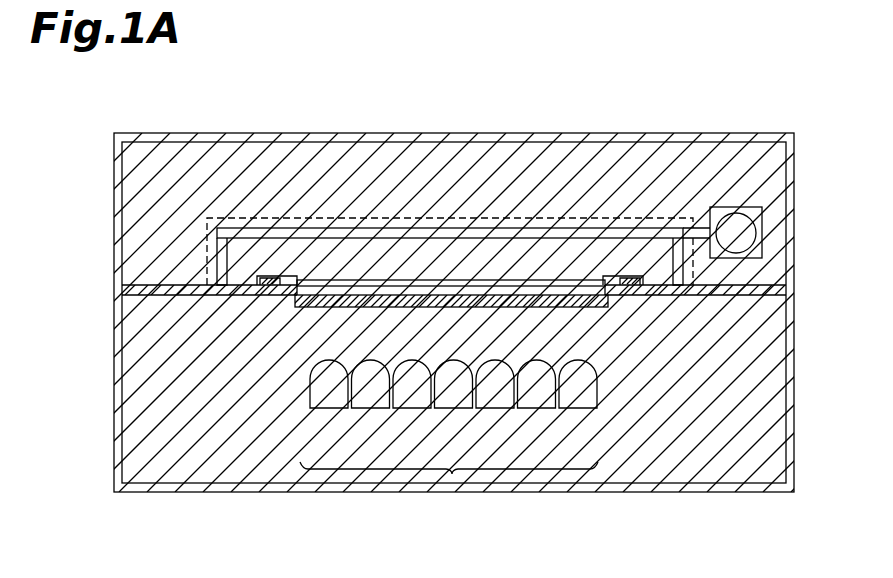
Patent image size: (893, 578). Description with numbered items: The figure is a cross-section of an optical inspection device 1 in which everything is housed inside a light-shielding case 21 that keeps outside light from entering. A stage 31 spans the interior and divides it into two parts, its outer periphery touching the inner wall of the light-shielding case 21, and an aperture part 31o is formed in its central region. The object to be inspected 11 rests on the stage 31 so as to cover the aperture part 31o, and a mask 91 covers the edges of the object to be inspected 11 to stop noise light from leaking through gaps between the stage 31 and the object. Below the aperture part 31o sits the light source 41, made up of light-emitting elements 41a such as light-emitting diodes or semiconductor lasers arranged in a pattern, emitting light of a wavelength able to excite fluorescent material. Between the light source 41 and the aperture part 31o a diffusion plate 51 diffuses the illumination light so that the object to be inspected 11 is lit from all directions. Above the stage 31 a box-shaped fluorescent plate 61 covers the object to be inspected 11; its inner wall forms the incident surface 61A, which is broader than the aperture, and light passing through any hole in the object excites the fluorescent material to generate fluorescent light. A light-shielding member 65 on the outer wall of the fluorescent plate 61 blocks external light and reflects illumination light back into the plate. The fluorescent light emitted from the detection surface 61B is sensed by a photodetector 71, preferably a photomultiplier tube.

The optical inspection device 1 is at (664, 91).
The light-shielding case 21 is at (504, 133).
The stage 31 is at (186, 297).
The aperture part 31o is at (347, 308).
The diffusion plate 51 is at (577, 308).
The object to be inspected 11 is at (484, 281).
The fluorescent plate 61 is at (455, 228).
The incident surface 61A is at (228, 257).
The detection surface 61B is at (708, 228).
The light-shielding member 65 is at (282, 218).
The photodetector 71 is at (736, 207).
The mask 91 is at (266, 287).
The light source 41 is at (452, 472).
The light-emitting elements 41a is at (574, 440).